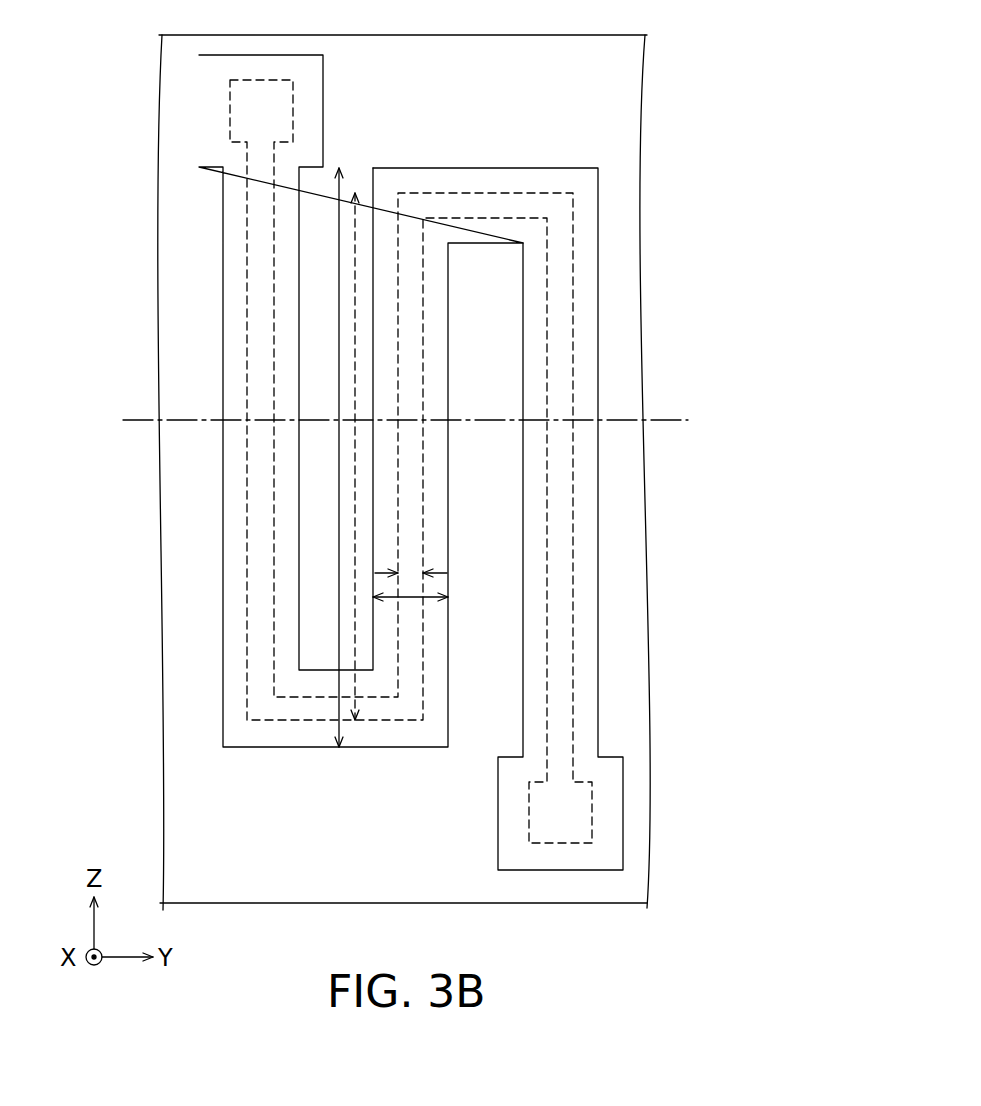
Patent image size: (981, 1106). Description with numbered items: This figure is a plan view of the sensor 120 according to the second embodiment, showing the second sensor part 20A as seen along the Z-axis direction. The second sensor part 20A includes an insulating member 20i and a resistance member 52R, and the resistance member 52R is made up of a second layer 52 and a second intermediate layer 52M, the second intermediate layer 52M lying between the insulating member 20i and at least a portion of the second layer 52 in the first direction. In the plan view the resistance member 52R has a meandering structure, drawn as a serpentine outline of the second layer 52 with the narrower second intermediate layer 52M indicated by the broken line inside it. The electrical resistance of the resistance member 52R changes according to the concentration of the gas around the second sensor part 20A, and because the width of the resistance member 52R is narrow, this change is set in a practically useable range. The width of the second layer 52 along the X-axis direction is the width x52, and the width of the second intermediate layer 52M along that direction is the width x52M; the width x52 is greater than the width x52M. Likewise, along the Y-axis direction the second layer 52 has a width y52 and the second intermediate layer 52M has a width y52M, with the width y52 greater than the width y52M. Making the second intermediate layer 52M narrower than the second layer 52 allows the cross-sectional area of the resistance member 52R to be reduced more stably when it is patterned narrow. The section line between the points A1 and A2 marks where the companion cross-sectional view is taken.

The sensor 120 is at (432, 472).
The second sensor part 20A is at (445, 472).
The insulating member 20i is at (625, 213).
The second layer 52 is at (400, 462).
The second intermediate layer 52M is at (247, 262).
The resistance member 52R is at (607, 353).
The width x52 is at (409, 597).
The width x52M is at (407, 573).
The width y52 is at (339, 638).
The width y52M is at (355, 563).
The line A1-A2 end point A1 is at (129, 423).
The line A1-A2 end point A2 is at (683, 423).